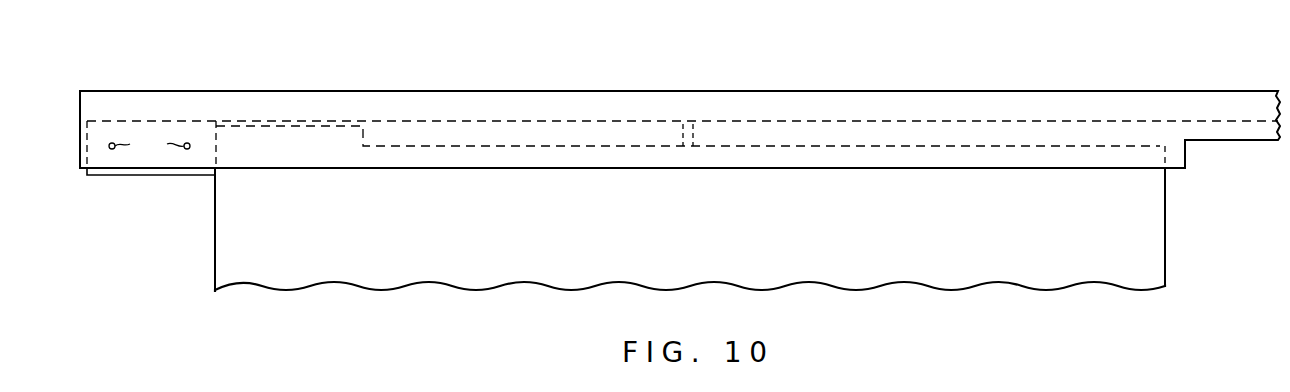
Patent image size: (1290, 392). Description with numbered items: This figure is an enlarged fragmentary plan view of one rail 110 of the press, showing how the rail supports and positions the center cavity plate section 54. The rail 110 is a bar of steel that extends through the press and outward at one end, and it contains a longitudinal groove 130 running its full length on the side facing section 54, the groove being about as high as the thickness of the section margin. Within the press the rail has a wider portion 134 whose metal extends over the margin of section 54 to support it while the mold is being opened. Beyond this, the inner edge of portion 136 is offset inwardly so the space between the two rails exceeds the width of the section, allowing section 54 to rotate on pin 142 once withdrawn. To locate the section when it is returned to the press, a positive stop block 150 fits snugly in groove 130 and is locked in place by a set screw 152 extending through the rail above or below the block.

The center cavity plate section 54 is at (695, 243).
The rail 110 is at (534, 83).
The longitudinal groove 130 is at (312, 143).
The portion in the mold 134 is at (837, 157).
The outer rail portion 136 is at (1241, 100).
The pin 142 is at (693, 123).
The positive stop block 150 is at (120, 173).
The set screw 152 is at (151, 143).